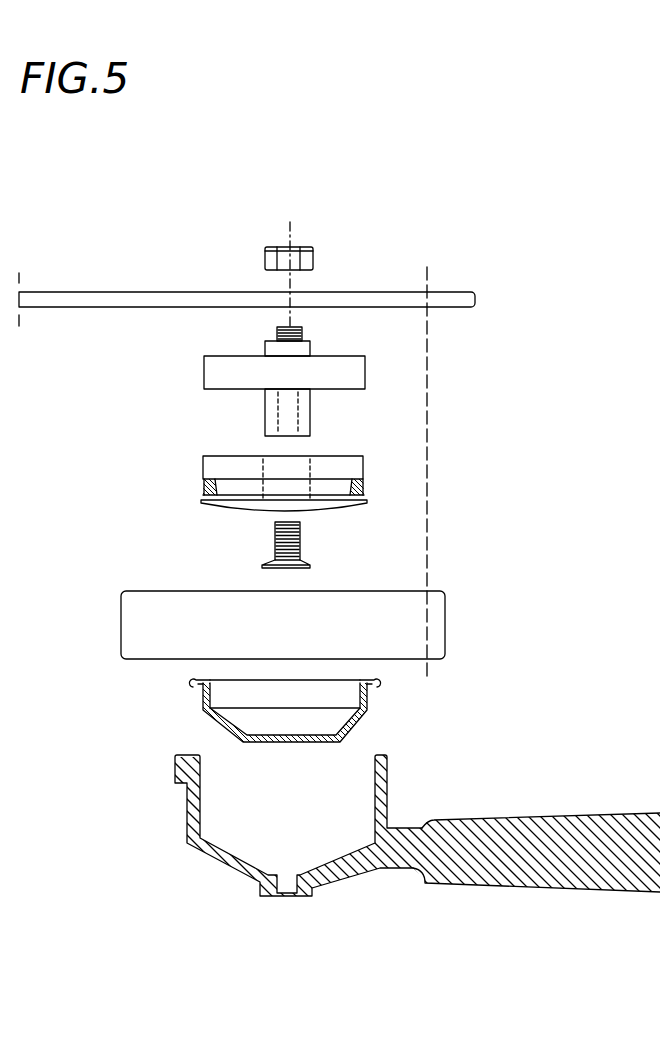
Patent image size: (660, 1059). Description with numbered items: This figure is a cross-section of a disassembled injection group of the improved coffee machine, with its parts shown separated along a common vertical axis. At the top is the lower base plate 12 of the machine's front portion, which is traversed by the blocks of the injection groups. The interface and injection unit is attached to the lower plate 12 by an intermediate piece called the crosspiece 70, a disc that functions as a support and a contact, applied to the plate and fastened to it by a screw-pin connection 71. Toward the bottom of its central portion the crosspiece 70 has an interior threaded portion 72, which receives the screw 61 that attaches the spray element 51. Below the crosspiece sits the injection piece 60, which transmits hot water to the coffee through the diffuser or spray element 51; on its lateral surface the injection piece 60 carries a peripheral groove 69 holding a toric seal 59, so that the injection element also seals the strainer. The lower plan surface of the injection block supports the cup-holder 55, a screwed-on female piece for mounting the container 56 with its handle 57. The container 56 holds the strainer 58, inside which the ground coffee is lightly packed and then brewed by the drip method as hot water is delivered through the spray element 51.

The lower base plate 12 is at (456, 298).
The spray element 51 is at (255, 513).
The cup-holder 55 is at (435, 630).
The container 56 is at (190, 812).
The handle 57 is at (470, 828).
The strainer 58 is at (200, 715).
The toric seal 59 is at (365, 489).
The injection piece 60 is at (372, 471).
The screw 61 is at (307, 548).
The peripheral groove 69 is at (203, 488).
The crosspiece 70 is at (372, 375).
The screw-pin connection 71 is at (322, 256).
The interior threaded portion 72 is at (305, 417).